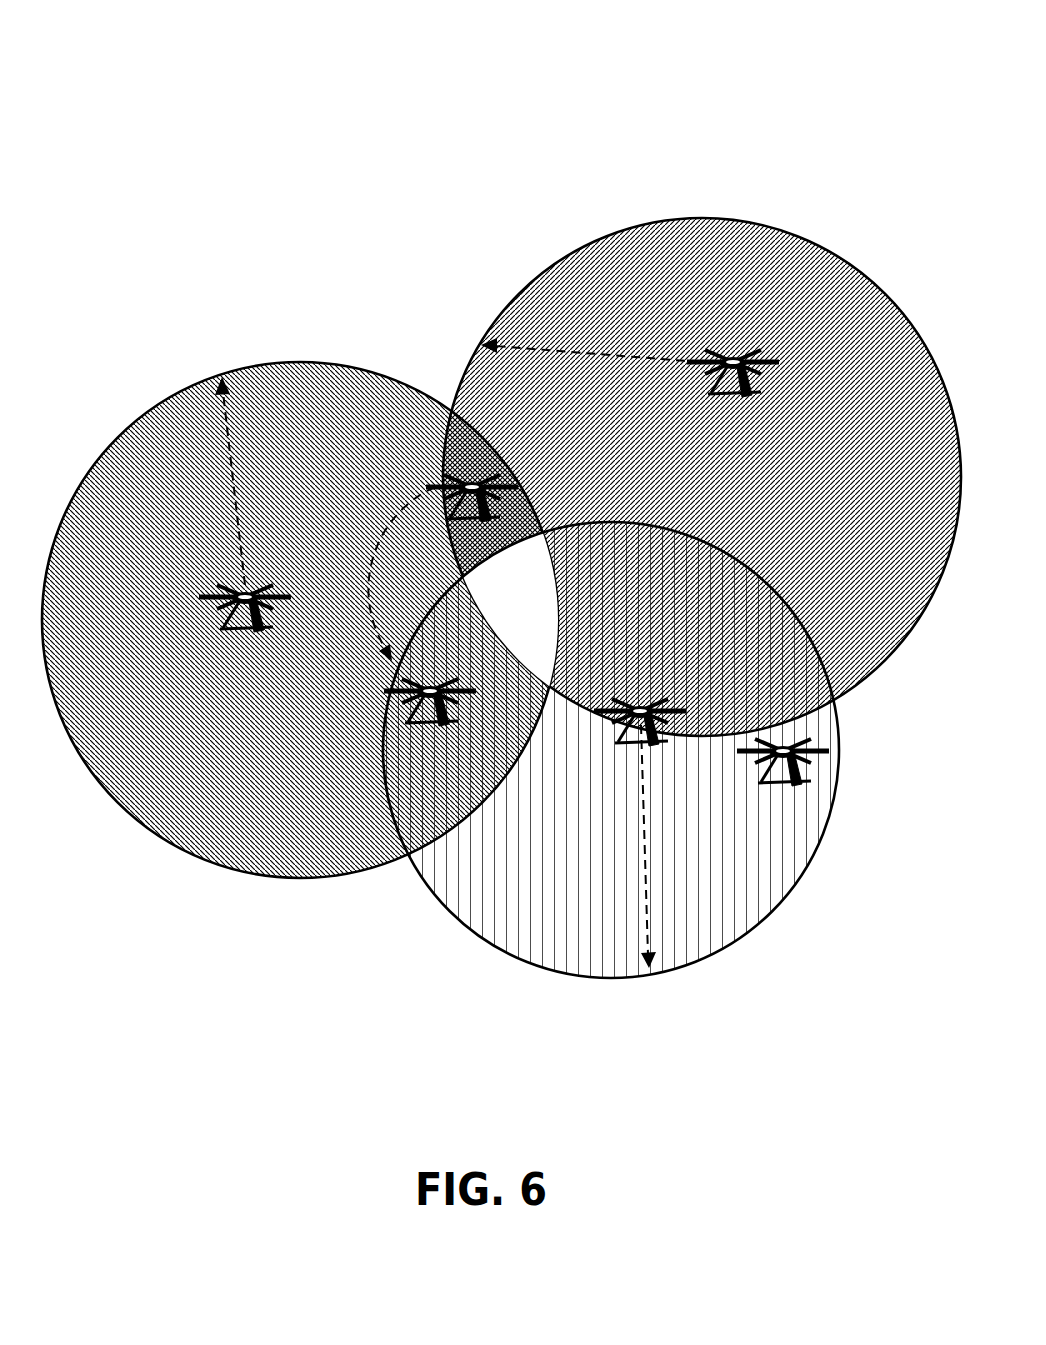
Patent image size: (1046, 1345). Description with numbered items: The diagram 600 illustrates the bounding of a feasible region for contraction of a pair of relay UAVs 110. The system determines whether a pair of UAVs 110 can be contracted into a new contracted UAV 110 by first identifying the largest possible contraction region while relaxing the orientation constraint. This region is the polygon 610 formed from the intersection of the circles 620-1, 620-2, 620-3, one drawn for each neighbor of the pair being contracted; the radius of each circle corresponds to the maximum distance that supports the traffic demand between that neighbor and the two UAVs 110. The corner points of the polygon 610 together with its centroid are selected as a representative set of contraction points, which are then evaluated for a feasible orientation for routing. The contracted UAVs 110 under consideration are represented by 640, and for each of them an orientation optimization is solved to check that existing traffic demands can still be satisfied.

The environment 600 is at (500, 37).
The relay UAVs 110 is at (757, 385).
The polygon 610 is at (540, 596).
The circle 620-1 is at (750, 929).
The circle 620-2 is at (515, 296).
The circle 620-3 is at (112, 452).
The contracted UAVs 640 is at (387, 530).